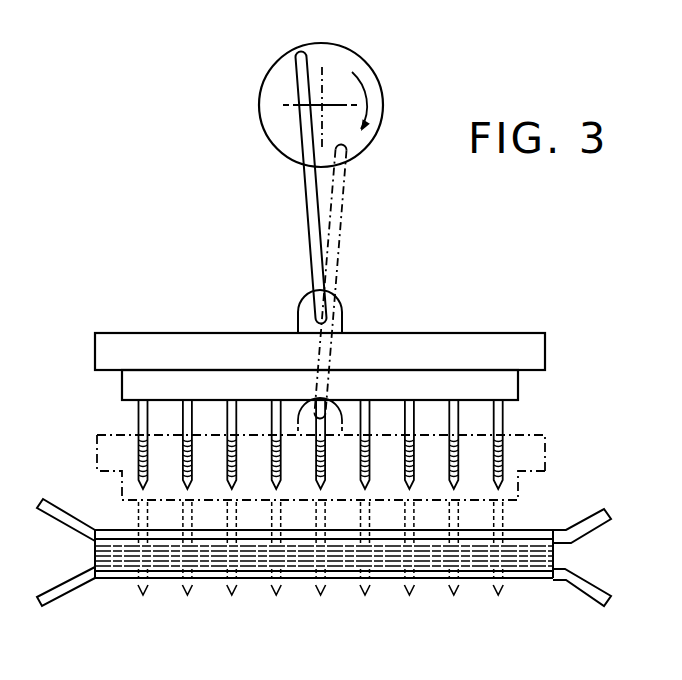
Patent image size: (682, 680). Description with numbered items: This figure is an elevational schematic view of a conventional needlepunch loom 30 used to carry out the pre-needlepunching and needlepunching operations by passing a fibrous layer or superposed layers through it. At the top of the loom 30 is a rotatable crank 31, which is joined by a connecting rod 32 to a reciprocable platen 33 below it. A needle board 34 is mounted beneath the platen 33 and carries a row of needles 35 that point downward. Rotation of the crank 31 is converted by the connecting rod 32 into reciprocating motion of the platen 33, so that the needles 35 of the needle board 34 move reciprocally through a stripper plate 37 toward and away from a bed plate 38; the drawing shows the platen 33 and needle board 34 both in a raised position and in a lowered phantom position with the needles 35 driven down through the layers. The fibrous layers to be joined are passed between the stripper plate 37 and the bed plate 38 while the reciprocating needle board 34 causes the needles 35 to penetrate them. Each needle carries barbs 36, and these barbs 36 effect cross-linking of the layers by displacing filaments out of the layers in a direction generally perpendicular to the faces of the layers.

The needlepunch loom 30 is at (150, 217).
The rotatable crank 31 is at (345, 58).
The connecting rod 32 is at (333, 229).
The reciprocable platen 33 is at (497, 337).
The needle board 34 is at (522, 386).
The needles 35 is at (403, 410).
The barbs 36 is at (138, 456).
The stripper plate 37 is at (112, 531).
The bed plate 38 is at (112, 575).